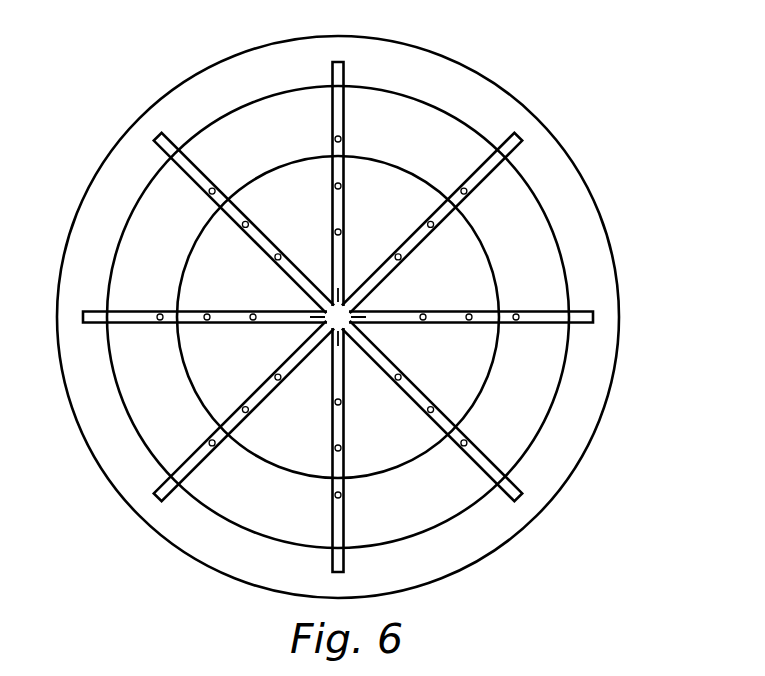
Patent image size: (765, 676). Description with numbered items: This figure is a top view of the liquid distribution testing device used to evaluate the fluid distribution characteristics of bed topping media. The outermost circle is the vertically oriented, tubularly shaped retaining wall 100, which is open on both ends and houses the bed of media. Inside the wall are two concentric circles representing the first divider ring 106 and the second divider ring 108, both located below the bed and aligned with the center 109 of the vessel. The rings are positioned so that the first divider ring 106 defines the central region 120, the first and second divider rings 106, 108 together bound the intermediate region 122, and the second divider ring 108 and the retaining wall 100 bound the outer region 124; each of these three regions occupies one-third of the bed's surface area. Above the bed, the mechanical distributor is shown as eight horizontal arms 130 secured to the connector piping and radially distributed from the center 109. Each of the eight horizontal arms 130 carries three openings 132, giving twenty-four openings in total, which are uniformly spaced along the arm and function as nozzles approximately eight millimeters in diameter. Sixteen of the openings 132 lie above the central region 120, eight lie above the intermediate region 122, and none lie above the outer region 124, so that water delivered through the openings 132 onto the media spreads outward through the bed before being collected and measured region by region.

The retaining wall 100 is at (460, 62).
The first divider ring 106 is at (493, 262).
The second divider ring 108 is at (525, 177).
The center 109 is at (323, 312).
The central region 120 is at (450, 382).
The intermediate region 122 is at (433, 317).
The outer region 124 is at (377, 310).
The horizontal arms 130 is at (164, 151).
The openings 132 is at (341, 402).